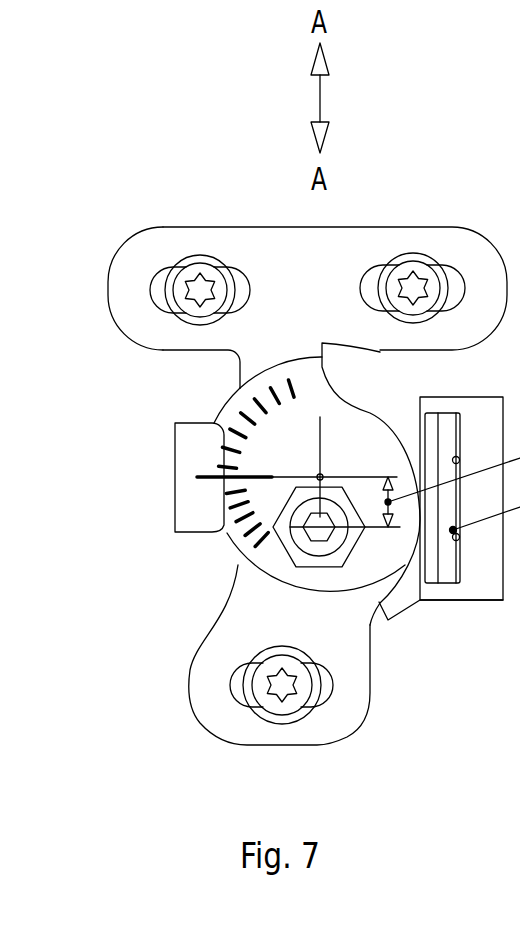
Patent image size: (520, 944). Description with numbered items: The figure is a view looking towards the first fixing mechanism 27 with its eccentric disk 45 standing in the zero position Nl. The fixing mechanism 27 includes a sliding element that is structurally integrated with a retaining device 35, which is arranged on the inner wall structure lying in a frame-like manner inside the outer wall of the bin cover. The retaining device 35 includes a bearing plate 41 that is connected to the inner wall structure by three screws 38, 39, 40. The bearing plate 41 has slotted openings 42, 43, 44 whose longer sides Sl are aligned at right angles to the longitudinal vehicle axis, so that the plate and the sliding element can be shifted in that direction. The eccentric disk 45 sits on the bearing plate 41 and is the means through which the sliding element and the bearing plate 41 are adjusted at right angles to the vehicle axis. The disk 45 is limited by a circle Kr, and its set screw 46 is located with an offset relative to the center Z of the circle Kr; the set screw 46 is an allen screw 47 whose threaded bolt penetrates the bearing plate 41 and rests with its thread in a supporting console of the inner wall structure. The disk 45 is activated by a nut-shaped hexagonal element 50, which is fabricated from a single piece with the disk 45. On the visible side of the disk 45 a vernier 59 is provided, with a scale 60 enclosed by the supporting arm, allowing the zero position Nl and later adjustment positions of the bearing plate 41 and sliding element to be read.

The first fixing mechanism 27 is at (307, 525).
The retaining device 35 is at (218, 738).
The screw 38 is at (200, 257).
The screw 39 is at (423, 257).
The screw 40 is at (298, 702).
The bearing plate 41 is at (371, 645).
The slotted opening 42 is at (157, 285).
The slotted opening 43 is at (458, 285).
The slotted opening 44 is at (327, 687).
The eccentric disk 45 is at (256, 496).
The set screw 46 is at (327, 532).
The allen screw 47 is at (317, 567).
The hexagonal element 50 is at (287, 538).
The vernier 59 is at (260, 458).
The lower scale marks 60 is at (257, 500).
The longer sides of the slotted openings Sl is at (310, 286).
The zero position Nl is at (197, 535).
The circle Kr is at (227, 552).
The center Z is at (323, 475).